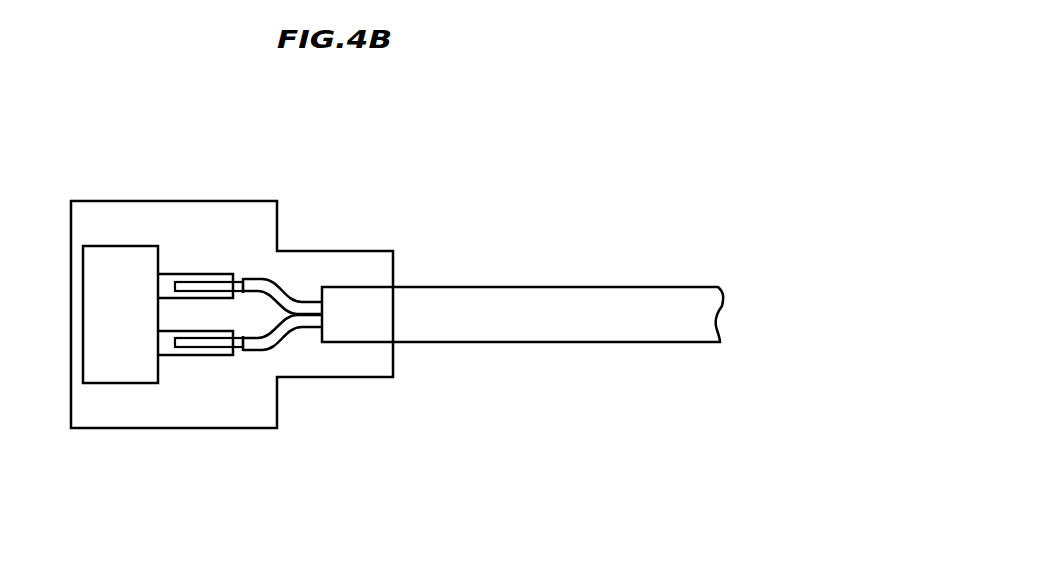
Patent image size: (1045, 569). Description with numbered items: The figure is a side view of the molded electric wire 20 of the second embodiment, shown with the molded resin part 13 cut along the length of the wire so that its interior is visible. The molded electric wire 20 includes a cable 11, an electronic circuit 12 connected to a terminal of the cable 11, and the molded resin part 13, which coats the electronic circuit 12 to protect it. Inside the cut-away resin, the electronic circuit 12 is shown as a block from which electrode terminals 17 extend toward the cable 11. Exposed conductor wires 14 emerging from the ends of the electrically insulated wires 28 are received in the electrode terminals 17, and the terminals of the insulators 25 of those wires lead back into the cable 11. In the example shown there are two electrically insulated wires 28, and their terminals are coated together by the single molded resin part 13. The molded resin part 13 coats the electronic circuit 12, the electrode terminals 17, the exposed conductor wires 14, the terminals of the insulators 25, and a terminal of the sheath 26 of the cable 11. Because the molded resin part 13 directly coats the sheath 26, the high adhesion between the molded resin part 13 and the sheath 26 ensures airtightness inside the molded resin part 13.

The molded electric wire 20 is at (478, 170).
The cable 11 is at (495, 279).
The sheath 26 is at (513, 322).
The molded resin part 13 is at (97, 212).
The electronic circuit 12 is at (118, 375).
The electrode terminal 17 is at (171, 279).
The exposed conductor wire 14 is at (222, 285).
The insulator 25 is at (282, 296).
The electrically insulated wire 28 is at (310, 150).